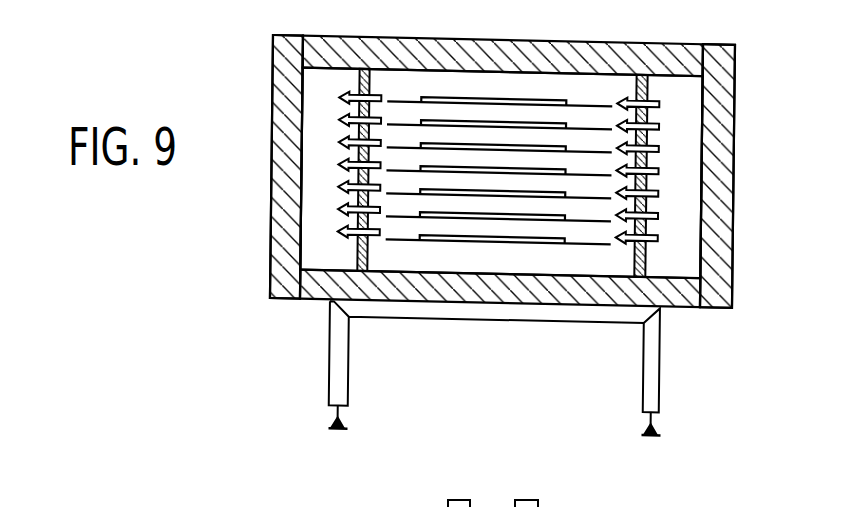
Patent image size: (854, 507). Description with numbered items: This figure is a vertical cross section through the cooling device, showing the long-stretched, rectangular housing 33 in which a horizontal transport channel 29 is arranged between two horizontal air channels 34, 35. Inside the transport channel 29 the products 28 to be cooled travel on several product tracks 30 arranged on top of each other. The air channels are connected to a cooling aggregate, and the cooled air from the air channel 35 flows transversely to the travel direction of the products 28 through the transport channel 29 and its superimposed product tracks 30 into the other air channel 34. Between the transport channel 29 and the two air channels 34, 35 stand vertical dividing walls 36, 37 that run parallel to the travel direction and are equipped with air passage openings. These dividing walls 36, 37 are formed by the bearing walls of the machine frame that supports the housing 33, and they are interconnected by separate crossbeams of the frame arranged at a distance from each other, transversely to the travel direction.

The housing 33 is at (273, 50).
The air channel 34 is at (310, 85).
The air channel 35 is at (688, 110).
The transport channel 29 is at (408, 82).
The dividing wall 36 is at (342, 176).
The dividing wall 37 is at (650, 183).
The products 28 is at (538, 150).
The product tracks 30 is at (605, 128).